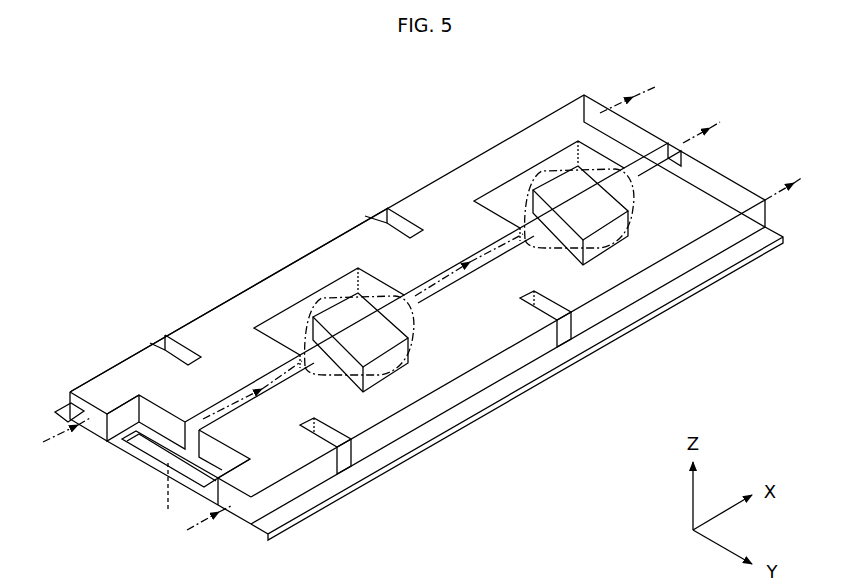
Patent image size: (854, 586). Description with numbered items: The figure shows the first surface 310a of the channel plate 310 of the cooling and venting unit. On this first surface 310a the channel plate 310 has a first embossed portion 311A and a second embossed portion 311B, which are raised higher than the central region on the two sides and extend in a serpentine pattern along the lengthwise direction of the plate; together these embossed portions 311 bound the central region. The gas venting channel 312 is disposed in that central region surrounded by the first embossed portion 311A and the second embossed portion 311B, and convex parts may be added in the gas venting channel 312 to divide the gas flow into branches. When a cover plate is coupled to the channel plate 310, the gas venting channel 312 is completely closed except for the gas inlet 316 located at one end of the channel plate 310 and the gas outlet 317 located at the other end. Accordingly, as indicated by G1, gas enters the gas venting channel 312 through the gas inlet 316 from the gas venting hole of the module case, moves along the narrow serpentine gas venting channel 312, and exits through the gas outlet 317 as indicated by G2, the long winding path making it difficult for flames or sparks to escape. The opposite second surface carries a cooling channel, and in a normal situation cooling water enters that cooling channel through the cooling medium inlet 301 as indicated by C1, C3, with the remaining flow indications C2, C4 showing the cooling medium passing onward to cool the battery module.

The channel plate 310 is at (318, 178).
The first surface 310a is at (227, 340).
The bus bar 311 is at (420, 334).
The first embossed portion 311A is at (353, 249).
The second embossed portion 311B is at (483, 343).
The gas venting channel 312 is at (288, 328).
The gas inlet 316 is at (142, 447).
The gas outlet 317 is at (668, 150).
The cooling medium inlet 301 is at (95, 428).
The cooling water entry flow C1 is at (323, 313).
The second current path C2 is at (644, 92).
The cooling water entry flow C3 is at (196, 525).
The fourth current path C4 is at (800, 175).
The gas entry flow G1 is at (152, 486).
The gas exit flow G2 is at (718, 126).